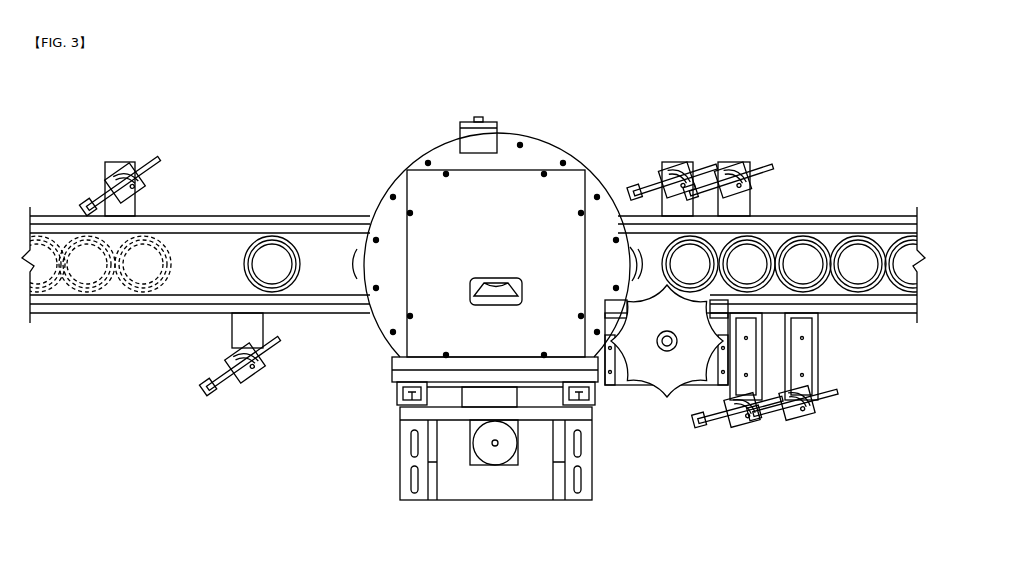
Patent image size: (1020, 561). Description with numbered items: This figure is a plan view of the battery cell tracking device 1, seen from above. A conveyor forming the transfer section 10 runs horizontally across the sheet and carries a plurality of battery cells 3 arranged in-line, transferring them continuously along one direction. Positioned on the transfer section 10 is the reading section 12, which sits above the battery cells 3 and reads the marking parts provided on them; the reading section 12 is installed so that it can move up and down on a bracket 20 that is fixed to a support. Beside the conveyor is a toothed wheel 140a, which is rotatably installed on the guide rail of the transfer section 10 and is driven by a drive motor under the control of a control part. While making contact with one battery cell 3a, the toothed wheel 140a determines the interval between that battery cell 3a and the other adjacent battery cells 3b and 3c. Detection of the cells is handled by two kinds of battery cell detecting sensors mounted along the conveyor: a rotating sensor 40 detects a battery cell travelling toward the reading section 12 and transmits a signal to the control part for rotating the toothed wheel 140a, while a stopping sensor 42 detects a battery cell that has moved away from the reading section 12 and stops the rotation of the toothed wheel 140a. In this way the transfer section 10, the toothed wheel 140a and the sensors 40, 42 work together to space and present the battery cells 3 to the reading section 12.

The battery cell tracking device 1 is at (388, 153).
The transfer section 10 is at (862, 214).
The reading section 12 is at (534, 165).
The bracket 20 is at (400, 462).
The battery cells 3 is at (730, 128).
The one battery cell 3a is at (686, 255).
The adjacent battery cell 3b is at (628, 268).
The adjacent battery cell 3c is at (743, 255).
The rotating sensor 40 is at (756, 178).
The stopping sensor 42 is at (122, 162).
The toothed wheel 140a is at (642, 372).